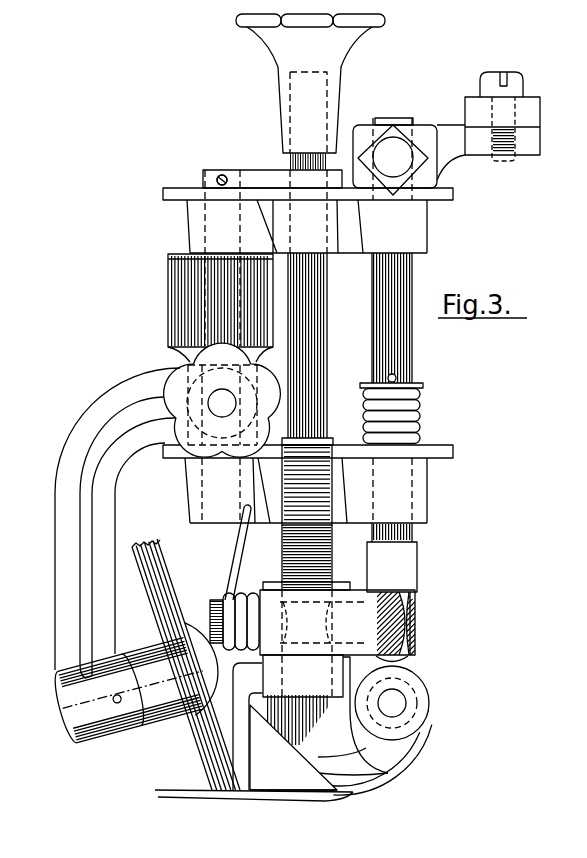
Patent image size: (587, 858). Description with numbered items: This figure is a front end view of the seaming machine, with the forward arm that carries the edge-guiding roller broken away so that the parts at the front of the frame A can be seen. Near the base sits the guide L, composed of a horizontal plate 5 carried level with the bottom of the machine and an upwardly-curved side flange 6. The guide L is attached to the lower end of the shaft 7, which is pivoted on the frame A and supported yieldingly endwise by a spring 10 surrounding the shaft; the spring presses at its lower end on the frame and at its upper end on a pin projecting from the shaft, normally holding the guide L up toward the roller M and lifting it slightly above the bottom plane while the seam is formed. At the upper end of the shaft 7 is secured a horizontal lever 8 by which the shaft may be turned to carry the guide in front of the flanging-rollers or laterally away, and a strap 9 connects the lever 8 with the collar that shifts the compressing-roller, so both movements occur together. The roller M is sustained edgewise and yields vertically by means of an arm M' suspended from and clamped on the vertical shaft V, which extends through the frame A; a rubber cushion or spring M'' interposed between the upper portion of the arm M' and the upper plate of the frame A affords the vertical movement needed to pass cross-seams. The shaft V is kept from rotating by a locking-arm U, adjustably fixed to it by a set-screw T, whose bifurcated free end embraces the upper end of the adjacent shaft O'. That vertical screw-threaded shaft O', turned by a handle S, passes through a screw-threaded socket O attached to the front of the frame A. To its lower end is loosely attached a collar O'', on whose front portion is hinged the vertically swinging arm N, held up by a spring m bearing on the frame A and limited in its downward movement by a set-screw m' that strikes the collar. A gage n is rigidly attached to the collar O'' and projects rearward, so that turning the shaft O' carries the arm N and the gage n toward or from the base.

The handle S is at (310, 88).
The set-screw T is at (219, 176).
The shaft V is at (220, 167).
The locking-arm U is at (272, 201).
The horizontal lever 8 is at (446, 148).
The strap 9 is at (497, 116).
The frame A is at (429, 231).
The rubber cushion or spring M'' is at (220, 308).
The screw-threaded shaft O' is at (319, 421).
The screw-threaded socket O is at (307, 485).
The shaft 7 is at (414, 351).
The spring 10 is at (421, 418).
The arm M' is at (116, 556).
The spring m is at (234, 577).
The collar O'' is at (337, 639).
The arm N is at (417, 622).
The set-screw m' is at (411, 703).
The gage n is at (247, 726).
The roller M is at (186, 664).
The upwardly-curved side flange 6 is at (293, 747).
The horizontal plate 5 is at (293, 785).
The guide L is at (276, 798).